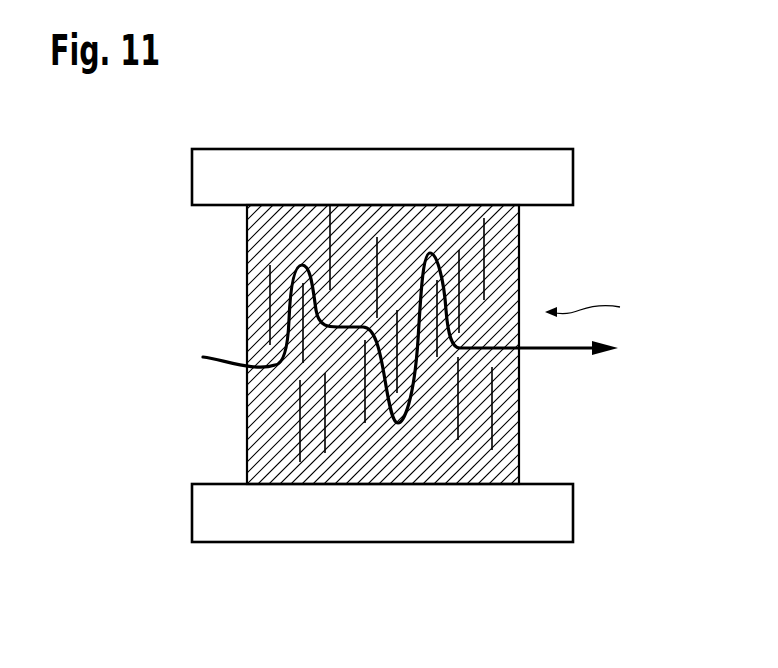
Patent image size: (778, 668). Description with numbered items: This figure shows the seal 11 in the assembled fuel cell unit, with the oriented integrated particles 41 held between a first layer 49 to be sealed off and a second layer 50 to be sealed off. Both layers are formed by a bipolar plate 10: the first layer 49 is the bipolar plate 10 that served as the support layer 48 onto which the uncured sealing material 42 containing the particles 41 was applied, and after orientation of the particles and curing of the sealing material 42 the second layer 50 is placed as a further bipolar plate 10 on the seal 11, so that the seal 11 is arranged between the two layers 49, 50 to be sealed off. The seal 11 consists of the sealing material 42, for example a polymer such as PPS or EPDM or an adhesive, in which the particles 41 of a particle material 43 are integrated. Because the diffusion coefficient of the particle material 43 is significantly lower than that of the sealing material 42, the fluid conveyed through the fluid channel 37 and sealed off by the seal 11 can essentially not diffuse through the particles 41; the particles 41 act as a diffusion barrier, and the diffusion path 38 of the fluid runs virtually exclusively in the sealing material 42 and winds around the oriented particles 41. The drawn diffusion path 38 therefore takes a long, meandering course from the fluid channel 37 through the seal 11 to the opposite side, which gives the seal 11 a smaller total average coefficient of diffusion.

The bipolar plate 10 is at (382, 345).
The second layer to be sealed off 50 is at (483, 158).
The support layer 48 is at (382, 555).
The first layer to be sealed off 49 is at (485, 530).
The particles 41 is at (377, 333).
The particle material 43 is at (268, 295).
The sealing material 42 is at (270, 249).
The fluid channel 37 is at (191, 424).
The diffusion path 38 is at (572, 351).
The seal 11 is at (596, 305).